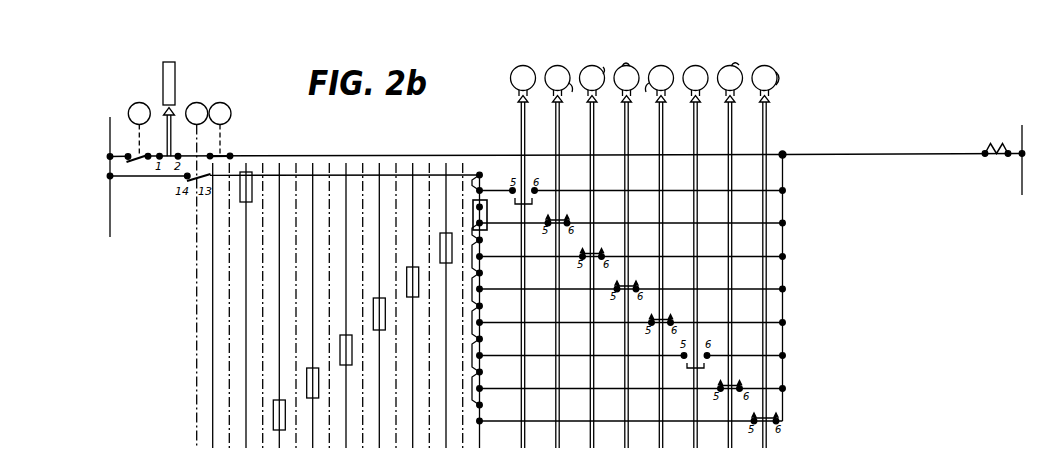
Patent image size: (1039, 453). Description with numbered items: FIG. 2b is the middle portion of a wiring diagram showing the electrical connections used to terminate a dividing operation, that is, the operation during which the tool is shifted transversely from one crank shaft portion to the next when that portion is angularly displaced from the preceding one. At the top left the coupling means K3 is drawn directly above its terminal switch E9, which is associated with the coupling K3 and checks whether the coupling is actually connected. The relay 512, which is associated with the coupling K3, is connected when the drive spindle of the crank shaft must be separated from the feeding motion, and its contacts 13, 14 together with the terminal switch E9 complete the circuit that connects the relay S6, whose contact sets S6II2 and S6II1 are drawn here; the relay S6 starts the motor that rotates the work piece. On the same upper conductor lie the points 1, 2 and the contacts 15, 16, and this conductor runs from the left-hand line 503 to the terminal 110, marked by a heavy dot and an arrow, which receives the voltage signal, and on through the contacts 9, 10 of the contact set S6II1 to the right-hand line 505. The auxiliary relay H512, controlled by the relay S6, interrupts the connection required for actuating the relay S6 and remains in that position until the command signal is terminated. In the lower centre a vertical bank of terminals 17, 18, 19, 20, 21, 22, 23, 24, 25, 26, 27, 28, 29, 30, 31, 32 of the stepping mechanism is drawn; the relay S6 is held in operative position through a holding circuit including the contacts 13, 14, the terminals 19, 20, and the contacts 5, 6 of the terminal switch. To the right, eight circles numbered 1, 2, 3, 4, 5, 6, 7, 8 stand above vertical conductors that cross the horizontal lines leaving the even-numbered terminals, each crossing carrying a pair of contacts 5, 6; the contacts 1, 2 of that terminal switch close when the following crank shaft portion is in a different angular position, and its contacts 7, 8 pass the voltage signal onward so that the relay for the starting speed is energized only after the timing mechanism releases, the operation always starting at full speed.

The contact of terminal switch E10/2 1 is at (510, 74).
The contact of terminal switch E10/ 2 is at (550, 68).
The stepping switch circuit 3 indicator 3 is at (587, 68).
The stepping switch circuit 4 indicator 4 is at (617, 67).
The contact of terminal switch E10/2 5 is at (654, 68).
The contact of terminal switch E10/2 6 is at (689, 70).
The contact of terminal switch 7 is at (723, 68).
The contact of terminal switch 8 is at (762, 67).
The contact 9 is at (984, 160).
The contact 10 is at (1008, 160).
The contact of relay S12 13 is at (137, 151).
The contact of relay S12 14 is at (149, 150).
The contact 15 is at (217, 150).
The contact 16 is at (233, 150).
The bank contact 17 is at (488, 171).
The bank contact 18 is at (488, 186).
The terminal 19 is at (489, 203).
The terminal 20 is at (489, 219).
The bank contact 21 is at (488, 236).
The bank contact 22 is at (488, 252).
The bank contact 23 is at (488, 269).
The bank contact 24 is at (488, 285).
The bank contact 25 is at (488, 302).
The bank contact 26 is at (488, 318).
The bank contact 27 is at (488, 335).
The bank contact 28 is at (488, 351).
The bank contact 29 is at (488, 368).
The bank contact 30 is at (488, 384).
The bank contact 31 is at (488, 401).
The bank contact 32 is at (488, 417).
The terminal 110 is at (811, 188).
The supply line 503 is at (110, 134).
The supply line 505 is at (1022, 191).
The coupling means K3 is at (169, 62).
The terminal switch E9 is at (171, 146).
The relay S12 512 is at (140, 102).
The relay S6 contact set S6II2 is at (197, 102).
The auxiliary relay HS12 H512 is at (227, 105).
The relay S6 contact set S6II1 is at (991, 134).